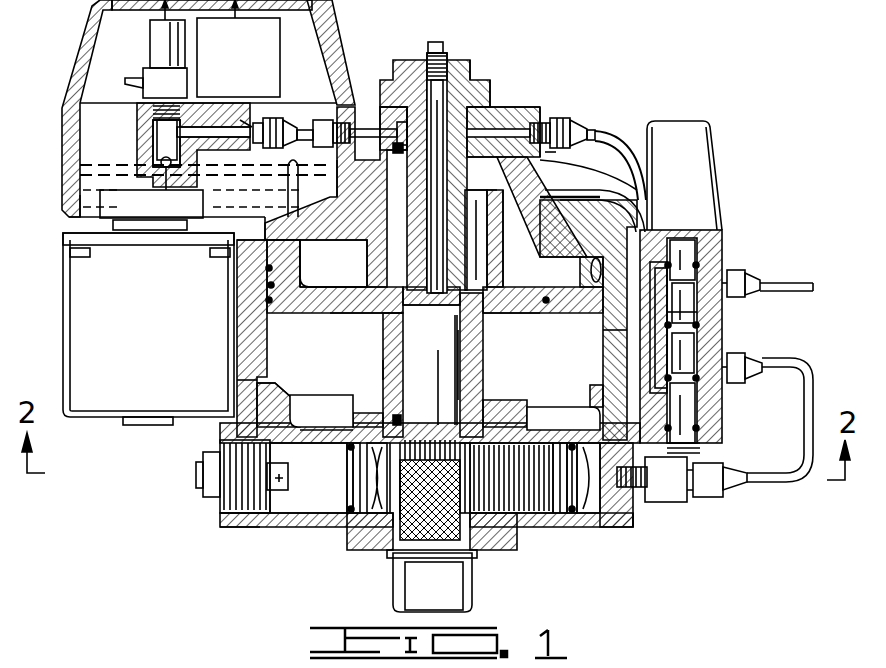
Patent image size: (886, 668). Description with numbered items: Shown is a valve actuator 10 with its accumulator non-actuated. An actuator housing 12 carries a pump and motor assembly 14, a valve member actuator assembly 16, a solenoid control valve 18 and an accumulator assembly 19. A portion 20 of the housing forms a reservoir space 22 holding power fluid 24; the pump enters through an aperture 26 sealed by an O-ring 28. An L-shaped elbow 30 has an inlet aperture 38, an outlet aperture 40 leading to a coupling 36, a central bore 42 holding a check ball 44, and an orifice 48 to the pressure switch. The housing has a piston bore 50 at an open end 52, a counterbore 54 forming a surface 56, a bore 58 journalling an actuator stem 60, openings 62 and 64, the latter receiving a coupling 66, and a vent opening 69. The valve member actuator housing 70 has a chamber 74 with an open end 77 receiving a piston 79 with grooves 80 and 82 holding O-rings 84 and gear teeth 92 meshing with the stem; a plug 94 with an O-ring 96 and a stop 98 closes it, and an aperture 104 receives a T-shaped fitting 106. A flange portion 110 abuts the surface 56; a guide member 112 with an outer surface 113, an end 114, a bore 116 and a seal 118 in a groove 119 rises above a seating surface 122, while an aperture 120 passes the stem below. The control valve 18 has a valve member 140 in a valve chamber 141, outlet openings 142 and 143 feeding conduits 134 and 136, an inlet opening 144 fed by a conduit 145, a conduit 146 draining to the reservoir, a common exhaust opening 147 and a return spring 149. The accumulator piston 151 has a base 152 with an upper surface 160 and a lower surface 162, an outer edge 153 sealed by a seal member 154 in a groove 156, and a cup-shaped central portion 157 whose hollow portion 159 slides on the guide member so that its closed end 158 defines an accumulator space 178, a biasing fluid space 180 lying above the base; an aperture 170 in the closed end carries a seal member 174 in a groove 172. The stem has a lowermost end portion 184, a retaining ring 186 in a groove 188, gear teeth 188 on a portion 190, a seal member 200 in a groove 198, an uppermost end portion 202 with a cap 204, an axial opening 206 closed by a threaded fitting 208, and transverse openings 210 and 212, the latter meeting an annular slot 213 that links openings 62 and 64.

The valve actuator 10 is at (562, 114).
The actuator housing 12 is at (528, 110).
The pump and motor assembly 14 is at (58, 310).
The valve member actuator assembly 16 is at (636, 534).
The solenoid control valve 18 is at (728, 238).
The accumulator assembly 19 is at (520, 179).
The portion of actuator housing 20 is at (74, 58).
The reservoir space 22 is at (80, 183).
The power fluid 24 is at (88, 203).
The aperture 26 is at (183, 240).
The O-ring 28 is at (127, 242).
The L-shaped elbow 30 is at (140, 154).
The coupling 36 is at (292, 117).
The inlet aperture 38 is at (166, 182).
The outlet aperture 40 is at (228, 110).
The central bore 42 is at (150, 136).
The ball 44 is at (192, 128).
The orifice 48 is at (250, 122).
The piston bore 50 is at (268, 321).
The open end 52 is at (236, 432).
The counterbore 54 is at (263, 392).
The surface 56 is at (597, 390).
The bore 58 is at (497, 110).
The actuator stem 60 is at (460, 224).
The opening 62 is at (375, 127).
The opening 64 is at (538, 114).
The coupling 66 is at (595, 118).
The vent opening 69 is at (238, 393).
The valve member actuator housing 70 is at (268, 515).
The chamber 74 is at (318, 528).
The open end 77 is at (228, 518).
The piston 79 is at (358, 548).
The groove 80 is at (350, 474).
The groove 82 is at (626, 530).
The O-ring seal member 84 is at (578, 505).
The gear teeth 92 is at (507, 475).
The plug 94 is at (212, 500).
The O-ring 96 is at (245, 530).
The stop 98 is at (276, 482).
The aperture 104 is at (592, 424).
The T-shaped fitting 106 is at (716, 511).
The flange portion 110 is at (345, 418).
The guide member 112 is at (475, 347).
The outer surface 113 is at (381, 374).
The end 114 is at (370, 290).
The bore 116 is at (463, 364).
The O-ring seal member 118 is at (375, 312).
The groove 119 is at (508, 292).
The aperture 120 is at (483, 548).
The seating surface 122 is at (350, 408).
The conduit 134 is at (780, 490).
The conduit 136 is at (790, 283).
The valve member 140 is at (722, 330).
The valve chamber 141 is at (700, 390).
The outlet opening 142 is at (724, 357).
The outlet opening 143 is at (722, 278).
The inlet opening 144 is at (740, 310).
The conduit 145 is at (625, 137).
The conduit 146 is at (573, 198).
The common exhaust opening 147 is at (617, 342).
The return spring 149 is at (715, 448).
The accumulator piston 151 is at (312, 305).
The base 152 is at (563, 302).
The outer edge 153 is at (262, 266).
The elastomeric seal member 154 is at (268, 282).
The groove 156 is at (264, 293).
The central portion 157 is at (372, 270).
The closed end 158 is at (552, 150).
The hollow portion 159 is at (414, 306).
The upper surface 160 is at (508, 314).
The lower surface 162 is at (545, 303).
The aperture 170 is at (425, 110).
The groove 172 is at (352, 180).
The elastomeric seal member 174 is at (347, 200).
The accumulator space 178 is at (490, 275).
The biasing fluid space 180 is at (335, 250).
The lowermost end portion 184 is at (462, 601).
The retaining ring 186 is at (398, 572).
The gear teeth 188 is at (422, 550).
The gear teeth portion 190 is at (393, 482).
The groove 198 is at (436, 420).
The elastomeric seal member 200 is at (394, 412).
The uppermost end portion 202 is at (474, 68).
The cap 204 is at (486, 80).
The opening 206 is at (491, 96).
The threaded fitting 208 is at (446, 55).
The opening 210 is at (384, 346).
The opening 212 is at (398, 90).
The annular slot 213 is at (397, 150).